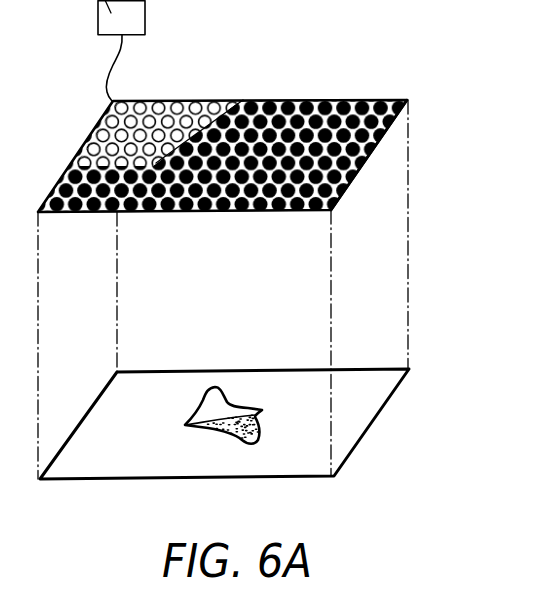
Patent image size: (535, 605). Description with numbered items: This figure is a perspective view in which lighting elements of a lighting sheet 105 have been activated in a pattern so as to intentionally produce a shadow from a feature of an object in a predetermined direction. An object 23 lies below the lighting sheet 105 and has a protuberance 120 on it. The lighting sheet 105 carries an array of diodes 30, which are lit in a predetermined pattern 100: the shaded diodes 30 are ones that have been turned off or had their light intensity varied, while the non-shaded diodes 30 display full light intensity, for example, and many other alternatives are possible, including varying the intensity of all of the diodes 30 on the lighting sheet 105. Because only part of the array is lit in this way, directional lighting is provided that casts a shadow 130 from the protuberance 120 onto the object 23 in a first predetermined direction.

The object 23 is at (124, 463).
The diodes 30 is at (222, 151).
The predetermined pattern 100 is at (193, 100).
The lighting sheet 105 is at (408, 100).
The protuberance 120 is at (253, 422).
The shadow 130 is at (247, 441).